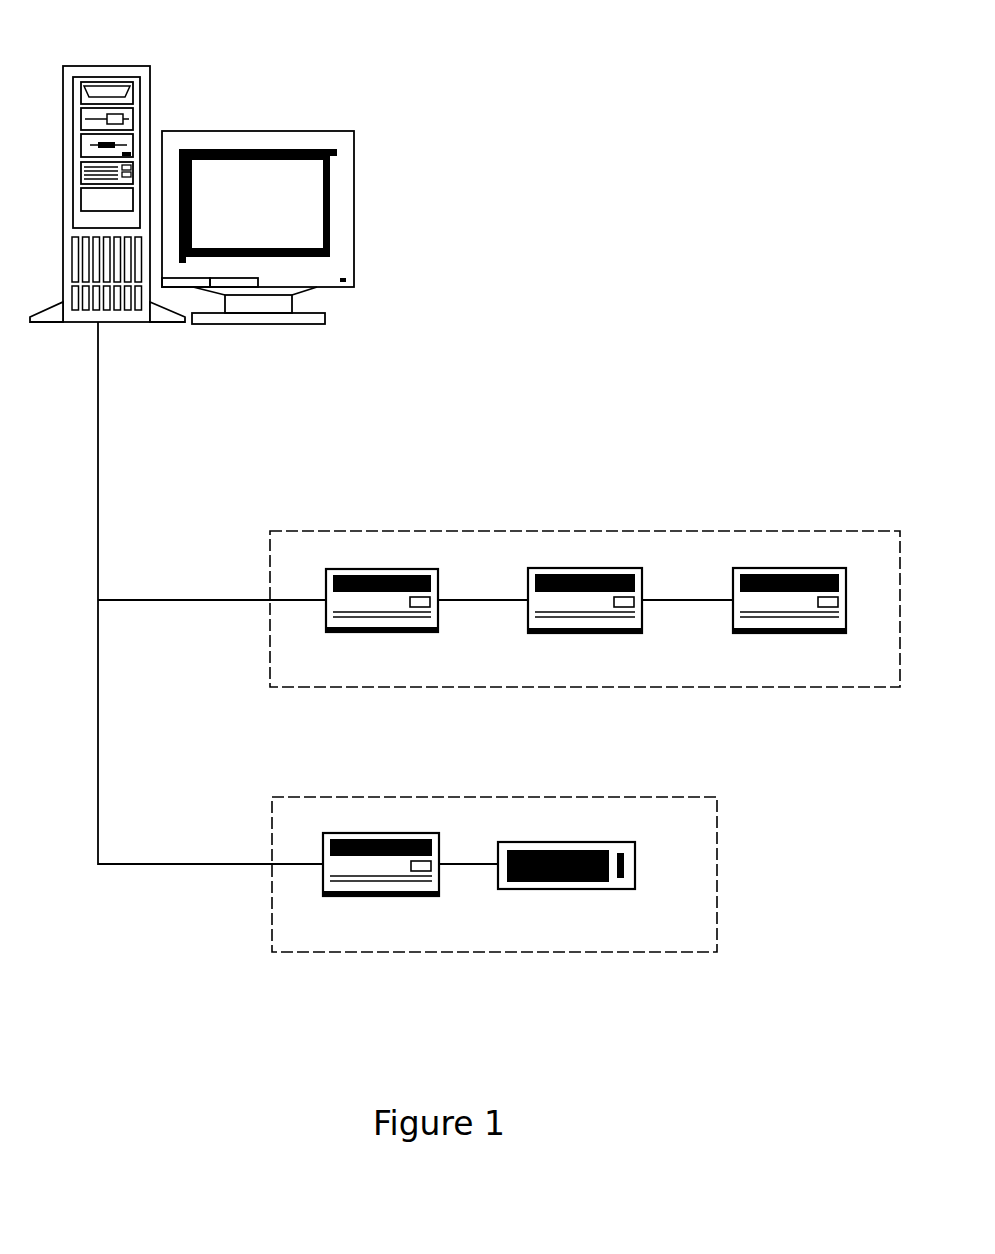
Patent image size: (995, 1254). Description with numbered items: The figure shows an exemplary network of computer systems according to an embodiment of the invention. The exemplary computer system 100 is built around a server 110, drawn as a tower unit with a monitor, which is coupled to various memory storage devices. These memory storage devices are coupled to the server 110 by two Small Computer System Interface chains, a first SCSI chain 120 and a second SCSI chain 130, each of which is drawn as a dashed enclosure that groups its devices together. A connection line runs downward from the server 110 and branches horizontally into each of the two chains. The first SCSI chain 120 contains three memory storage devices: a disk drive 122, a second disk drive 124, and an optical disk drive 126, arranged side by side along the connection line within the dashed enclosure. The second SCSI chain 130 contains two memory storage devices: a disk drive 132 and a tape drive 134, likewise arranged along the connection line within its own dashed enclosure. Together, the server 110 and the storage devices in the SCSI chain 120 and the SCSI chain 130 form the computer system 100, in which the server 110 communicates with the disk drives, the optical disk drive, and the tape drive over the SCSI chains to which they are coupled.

The computer system 100 is at (518, 60).
The server 110 is at (192, 222).
The SCSI chain 120 is at (585, 609).
The disk drive 122 is at (382, 615).
The disk drive 124 is at (585, 615).
The optical disk drive 126 is at (790, 615).
The SCSI chain 130 is at (494, 874).
The disk drive 132 is at (381, 880).
The tape drive 134 is at (566, 880).